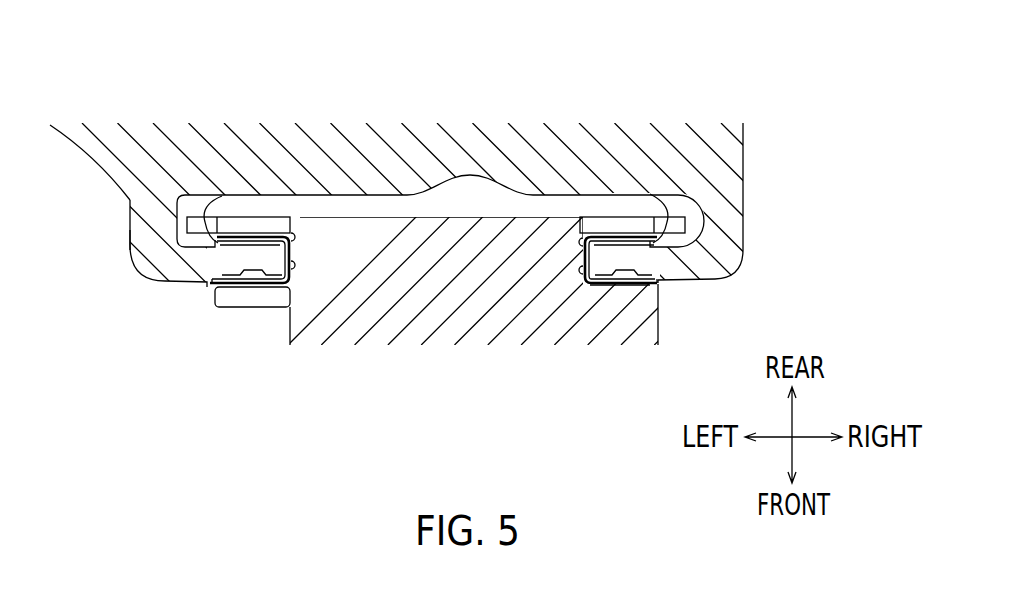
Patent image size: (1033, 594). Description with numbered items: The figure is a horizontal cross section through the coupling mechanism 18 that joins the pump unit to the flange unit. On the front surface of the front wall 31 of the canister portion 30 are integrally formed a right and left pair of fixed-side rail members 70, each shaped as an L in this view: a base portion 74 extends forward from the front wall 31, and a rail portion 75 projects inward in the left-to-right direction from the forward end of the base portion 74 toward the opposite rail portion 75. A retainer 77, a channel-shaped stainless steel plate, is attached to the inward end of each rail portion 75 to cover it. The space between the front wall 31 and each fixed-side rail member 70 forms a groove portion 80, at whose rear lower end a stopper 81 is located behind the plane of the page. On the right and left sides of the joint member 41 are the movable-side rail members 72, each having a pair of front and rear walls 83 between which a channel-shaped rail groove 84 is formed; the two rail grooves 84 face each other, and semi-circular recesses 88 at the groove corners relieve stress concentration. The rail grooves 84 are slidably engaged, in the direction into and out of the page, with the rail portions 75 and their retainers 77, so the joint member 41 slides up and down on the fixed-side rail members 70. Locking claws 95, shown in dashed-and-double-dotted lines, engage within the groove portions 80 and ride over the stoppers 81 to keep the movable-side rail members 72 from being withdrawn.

The coupling mechanism 18 is at (174, 355).
The canister portion 30 is at (391, 108).
The front wall 31 is at (483, 149).
The joint member 41 is at (413, 327).
The fixed-side rail member 70 is at (133, 278).
The movable-side rail member 72 is at (242, 203).
The base portion 74 is at (140, 228).
The rail portion 75 is at (257, 270).
The retainer 77 is at (210, 298).
The groove portion 80 is at (218, 213).
The stopper 81 is at (178, 194).
The wall 83 is at (262, 225).
The rail groove 84 is at (311, 280).
The recess 88 is at (294, 198).
The locking claw 95 is at (137, 244).